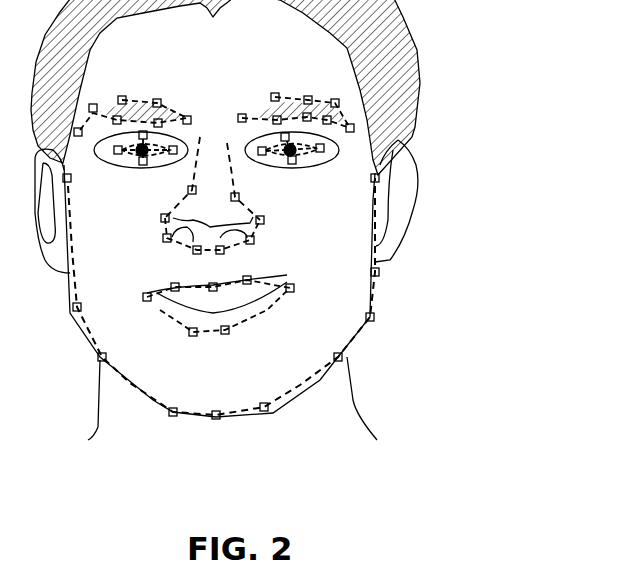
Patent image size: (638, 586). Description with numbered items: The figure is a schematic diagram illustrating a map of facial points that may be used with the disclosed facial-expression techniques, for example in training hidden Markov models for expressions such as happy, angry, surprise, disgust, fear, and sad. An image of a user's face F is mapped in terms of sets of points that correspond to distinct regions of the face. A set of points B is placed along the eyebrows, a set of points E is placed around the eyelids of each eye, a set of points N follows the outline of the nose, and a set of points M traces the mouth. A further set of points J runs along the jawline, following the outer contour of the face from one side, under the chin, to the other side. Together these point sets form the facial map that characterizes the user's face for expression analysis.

The face F is at (514, 28).
The eyebrow landmarks B is at (272, 97).
The eye landmarks E is at (294, 163).
The nose landmarks N is at (238, 195).
The mouth landmarks M is at (229, 331).
The jaw landmarks J is at (375, 317).